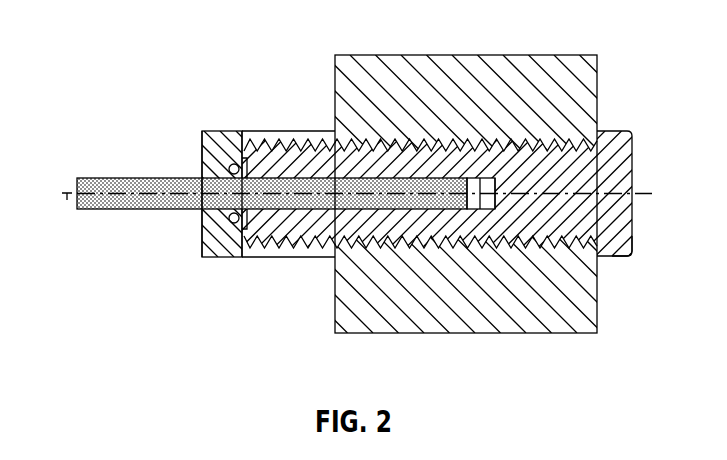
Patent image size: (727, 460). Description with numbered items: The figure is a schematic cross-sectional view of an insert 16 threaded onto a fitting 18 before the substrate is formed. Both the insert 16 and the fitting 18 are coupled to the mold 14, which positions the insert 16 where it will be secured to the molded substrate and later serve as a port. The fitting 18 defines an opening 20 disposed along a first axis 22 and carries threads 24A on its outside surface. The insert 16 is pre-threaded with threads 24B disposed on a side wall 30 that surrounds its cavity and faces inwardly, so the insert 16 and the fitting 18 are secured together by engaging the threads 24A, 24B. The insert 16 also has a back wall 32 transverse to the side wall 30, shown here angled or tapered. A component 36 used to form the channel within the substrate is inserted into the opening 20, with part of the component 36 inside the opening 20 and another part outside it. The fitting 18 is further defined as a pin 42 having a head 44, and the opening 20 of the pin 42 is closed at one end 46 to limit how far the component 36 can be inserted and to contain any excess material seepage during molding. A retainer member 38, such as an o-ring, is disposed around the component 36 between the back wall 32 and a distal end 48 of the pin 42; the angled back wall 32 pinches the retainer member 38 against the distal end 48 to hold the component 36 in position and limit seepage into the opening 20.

The mold 14 is at (443, 62).
The insert 16 is at (219, 185).
The fitting 18 is at (628, 164).
The opening 20 is at (476, 212).
The first axis 22 is at (63, 205).
The threads 24A is at (483, 143).
The threads 24B is at (280, 243).
The side wall 30 is at (422, 195).
The back wall 32 is at (202, 153).
The component 36 is at (344, 249).
The retainer member 38 is at (233, 223).
The pin 42 is at (612, 137).
The head 44 is at (617, 254).
The end 46 is at (557, 198).
The distal end 48 is at (250, 133).